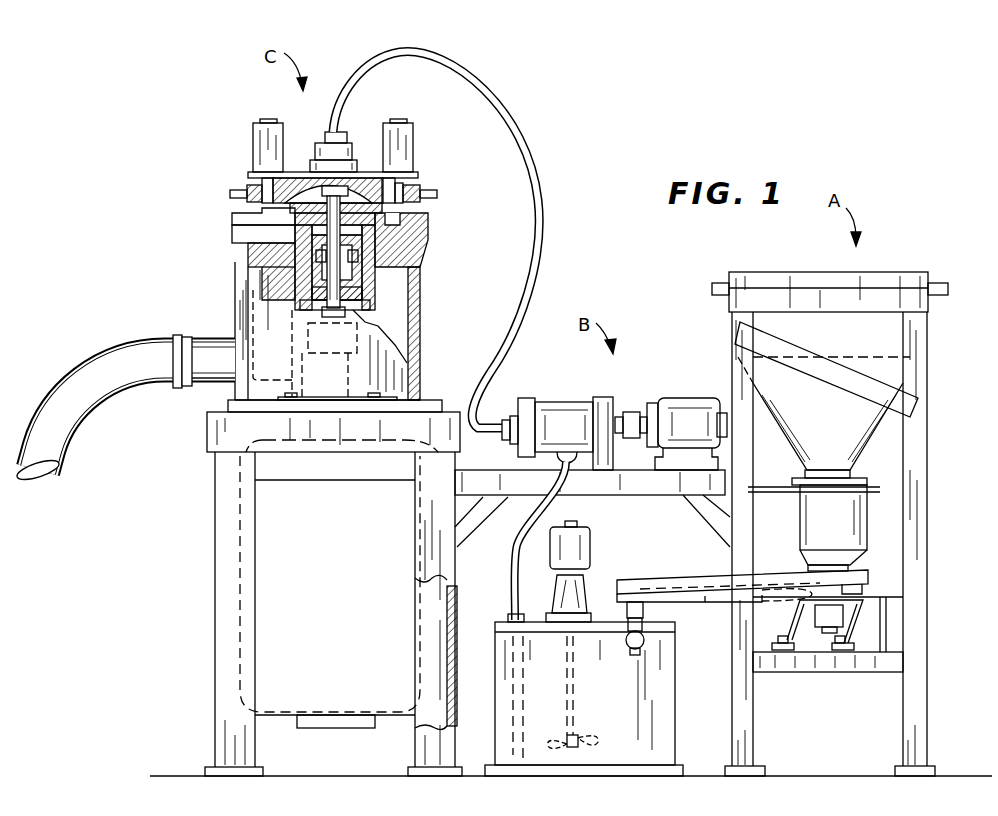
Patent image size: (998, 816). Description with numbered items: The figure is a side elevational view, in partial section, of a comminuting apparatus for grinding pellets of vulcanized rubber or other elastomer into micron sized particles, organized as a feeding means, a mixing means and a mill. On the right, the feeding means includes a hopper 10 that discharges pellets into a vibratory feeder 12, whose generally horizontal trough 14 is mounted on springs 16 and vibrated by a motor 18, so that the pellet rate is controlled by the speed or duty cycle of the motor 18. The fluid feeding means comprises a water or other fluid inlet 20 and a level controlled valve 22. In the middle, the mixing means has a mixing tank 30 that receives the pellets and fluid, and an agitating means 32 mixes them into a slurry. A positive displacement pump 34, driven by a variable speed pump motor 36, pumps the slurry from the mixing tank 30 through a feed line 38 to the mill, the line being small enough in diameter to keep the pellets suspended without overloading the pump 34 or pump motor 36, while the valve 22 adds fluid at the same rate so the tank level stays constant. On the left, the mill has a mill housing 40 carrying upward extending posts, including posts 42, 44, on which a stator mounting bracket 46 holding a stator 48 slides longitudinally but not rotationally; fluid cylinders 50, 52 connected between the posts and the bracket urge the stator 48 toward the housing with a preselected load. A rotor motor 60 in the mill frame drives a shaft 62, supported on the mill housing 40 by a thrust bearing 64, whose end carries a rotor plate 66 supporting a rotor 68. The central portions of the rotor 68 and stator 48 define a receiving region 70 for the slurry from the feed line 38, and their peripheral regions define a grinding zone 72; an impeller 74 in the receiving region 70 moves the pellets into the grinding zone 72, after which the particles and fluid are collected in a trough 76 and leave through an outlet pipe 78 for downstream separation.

The hopper 10 is at (886, 368).
The vibratory feeder 12 is at (836, 524).
The trough 14 is at (663, 582).
The springs 16 is at (853, 637).
The motor 18 is at (808, 637).
The fluid inlet 20 is at (657, 613).
The level controlled valve 22 is at (645, 638).
The mixing tank 30 is at (620, 700).
The agitating means 32 is at (578, 736).
The positive displacement pump 34 is at (529, 400).
The pump motor 36 is at (679, 400).
The feed line 38 is at (364, 64).
The mill housing 40 is at (420, 337).
The post 42 is at (422, 199).
The post 44 is at (256, 182).
The stator mounting bracket 46 is at (408, 173).
The stator 48 is at (416, 184).
The fluid cylinder 50 is at (412, 134).
The fluid cylinder 52 is at (258, 147).
The rotor motor 60 is at (340, 577).
The shaft 62 is at (348, 310).
The thrust bearing 64 is at (353, 277).
The rotor plate 66 is at (403, 253).
The rotor 68 is at (248, 225).
The receiving region 70 is at (347, 173).
The grinding zone 72 is at (247, 198).
The impeller 74 is at (315, 190).
The trough 76 is at (282, 233).
The outlet pipe 78 is at (184, 392).